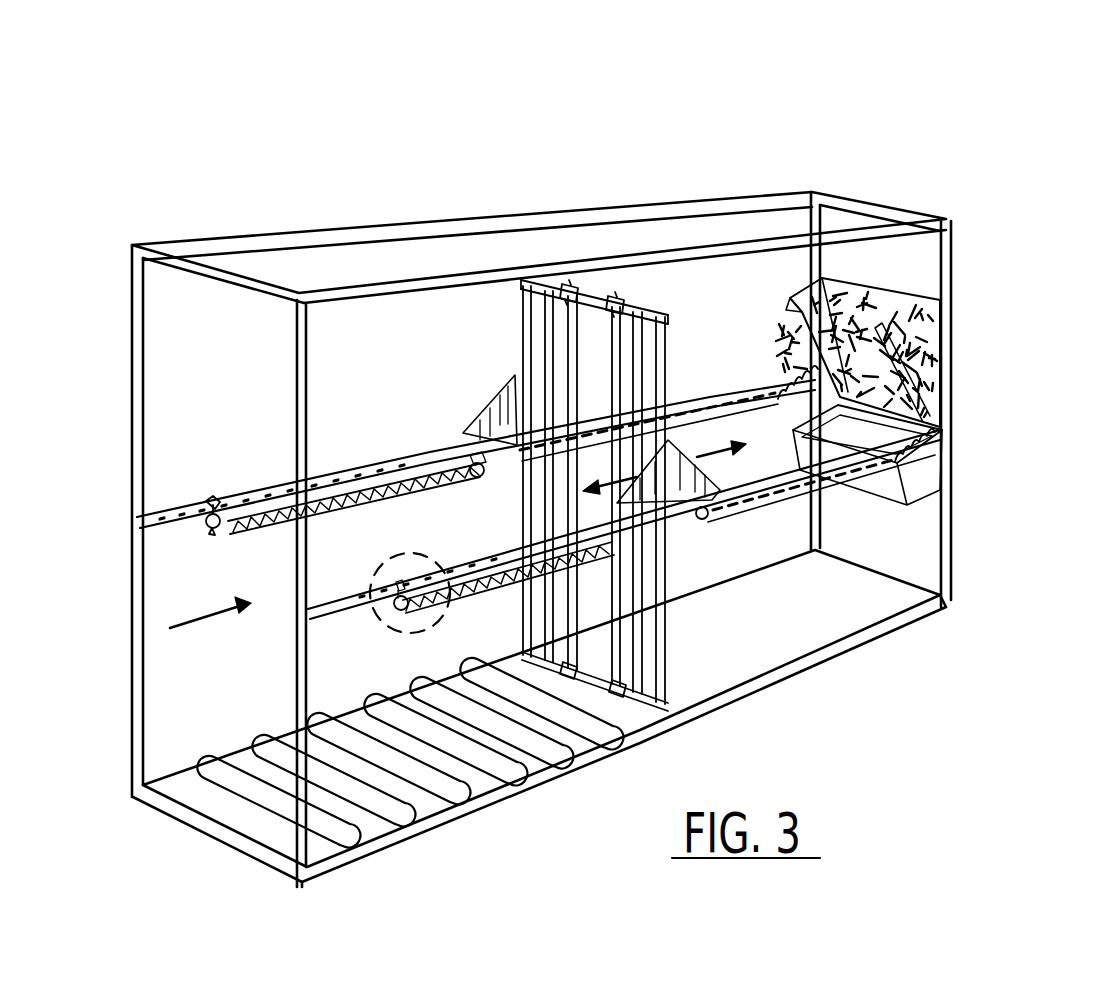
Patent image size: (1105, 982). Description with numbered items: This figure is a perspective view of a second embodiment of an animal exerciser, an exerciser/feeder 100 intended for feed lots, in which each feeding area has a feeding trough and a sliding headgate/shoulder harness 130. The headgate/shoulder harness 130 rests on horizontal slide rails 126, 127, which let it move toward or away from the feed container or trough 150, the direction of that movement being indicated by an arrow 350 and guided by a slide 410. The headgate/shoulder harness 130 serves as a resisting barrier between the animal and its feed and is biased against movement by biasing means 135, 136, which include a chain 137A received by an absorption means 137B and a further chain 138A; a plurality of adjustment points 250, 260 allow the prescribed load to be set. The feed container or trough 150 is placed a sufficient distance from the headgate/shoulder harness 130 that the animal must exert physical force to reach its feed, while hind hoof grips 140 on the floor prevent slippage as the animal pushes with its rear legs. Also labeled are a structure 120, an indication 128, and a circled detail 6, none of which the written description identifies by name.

The exerciser/feeder 100 is at (466, 93).
The container housing 120 is at (300, 235).
The horizontal slide rail 126 is at (320, 600).
The horizontal slide rail 127 is at (418, 455).
The material flow direction 128 is at (196, 622).
The headgate/shoulder harness 130 is at (670, 320).
The biasing means 135 is at (478, 595).
The biasing means 136 is at (364, 492).
The chain 137A is at (773, 502).
The absorption means for chain 137B is at (940, 448).
The chain 138A is at (694, 413).
The hoof grips 140 is at (440, 800).
The feed container or trough 150 is at (940, 360).
The plurality of adjustment points 250 is at (355, 603).
The plurality of adjustment points 260 is at (180, 508).
The arrow 350 is at (740, 446).
The slide 410 is at (503, 382).
The detail view circle (FIG. 6) 6 is at (441, 557).